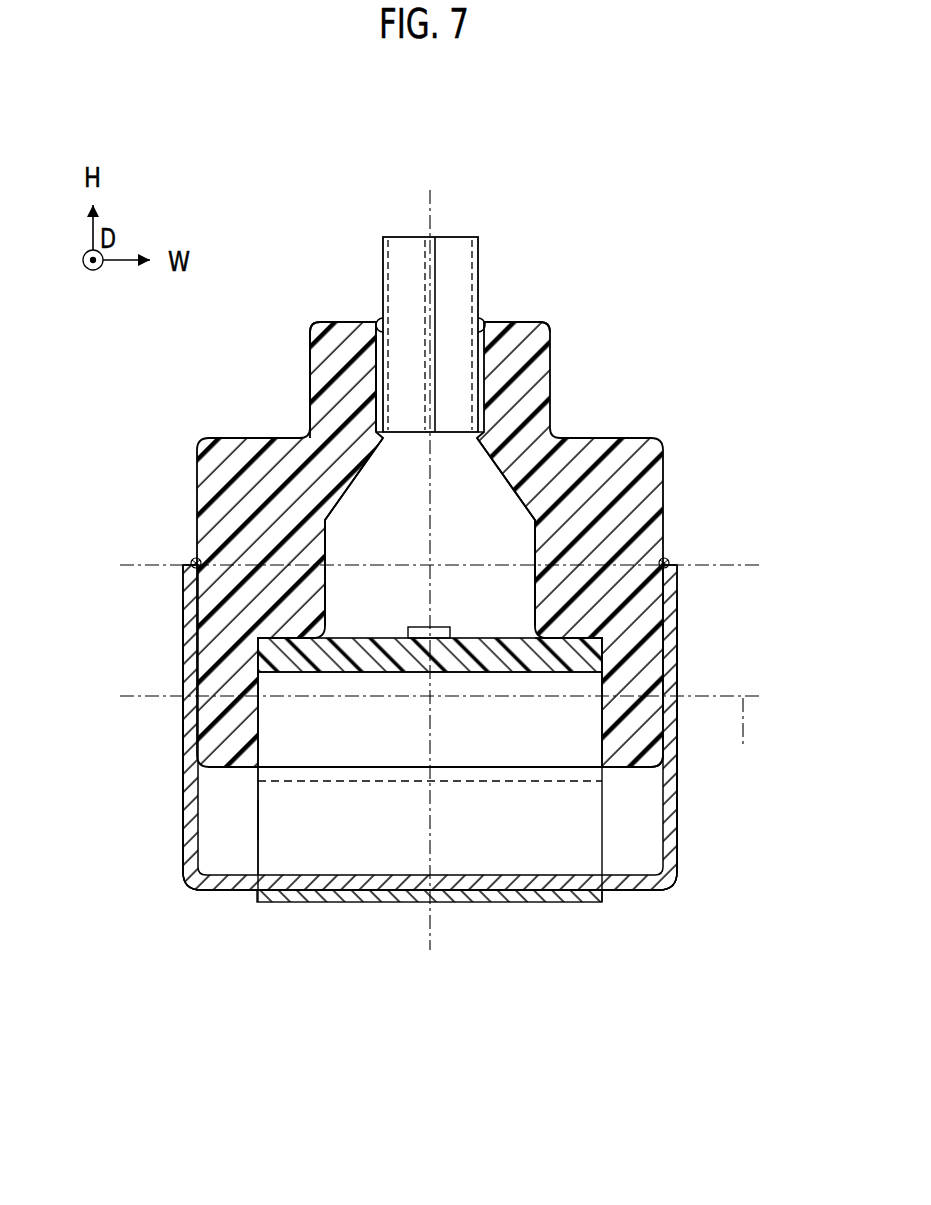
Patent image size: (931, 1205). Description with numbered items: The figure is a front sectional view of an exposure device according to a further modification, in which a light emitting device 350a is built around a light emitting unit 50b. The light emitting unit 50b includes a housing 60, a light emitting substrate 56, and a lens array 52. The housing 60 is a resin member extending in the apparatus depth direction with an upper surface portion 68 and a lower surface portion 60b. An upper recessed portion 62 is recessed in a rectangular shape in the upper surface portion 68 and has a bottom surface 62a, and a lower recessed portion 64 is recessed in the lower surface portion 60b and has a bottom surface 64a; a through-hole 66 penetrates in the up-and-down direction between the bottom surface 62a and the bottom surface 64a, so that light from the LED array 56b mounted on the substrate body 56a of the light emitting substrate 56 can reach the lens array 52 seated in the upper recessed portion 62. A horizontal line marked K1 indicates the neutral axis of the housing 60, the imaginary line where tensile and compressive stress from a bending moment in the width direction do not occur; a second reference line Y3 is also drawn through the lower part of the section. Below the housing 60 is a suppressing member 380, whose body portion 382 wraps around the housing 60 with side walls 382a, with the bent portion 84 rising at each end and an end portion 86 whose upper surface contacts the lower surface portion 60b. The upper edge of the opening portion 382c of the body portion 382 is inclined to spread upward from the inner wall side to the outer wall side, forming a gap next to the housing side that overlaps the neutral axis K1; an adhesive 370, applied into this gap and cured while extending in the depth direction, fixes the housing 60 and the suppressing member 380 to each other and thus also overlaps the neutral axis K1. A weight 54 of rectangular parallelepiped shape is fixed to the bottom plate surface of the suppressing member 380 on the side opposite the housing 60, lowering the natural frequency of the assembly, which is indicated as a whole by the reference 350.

The light emitting unit 50b is at (634, 316).
The lens array 52 is at (457, 237).
The weight 54 is at (548, 903).
The light emitting substrate 56 is at (330, 684).
The substrate body 56a is at (378, 674).
The LED array 56b is at (410, 628).
The housing 60 is at (548, 322).
The lower surface portion 60b is at (628, 768).
The upper recessed portion 62 is at (484, 320).
The bottom surface 62a is at (470, 440).
The lower recessed portion 64 is at (603, 717).
The bottom surface 64a is at (540, 650).
The through-hole 66 is at (501, 542).
The upper surface portion 68 is at (343, 322).
The bent portion 84 is at (166, 828).
The end portion 86 is at (258, 778).
The cover unit 350 is at (715, 1042).
The light emitting device 350a is at (667, 960).
The adhesive 370 is at (195, 559).
The suppressing member 380 is at (670, 890).
The body portion 382 is at (442, 794).
The side wall of cover body 382a is at (191, 680).
The opening portion 382c is at (191, 562).
The neutral axis K1 is at (749, 557).
The reference line Y3 is at (441, 739).